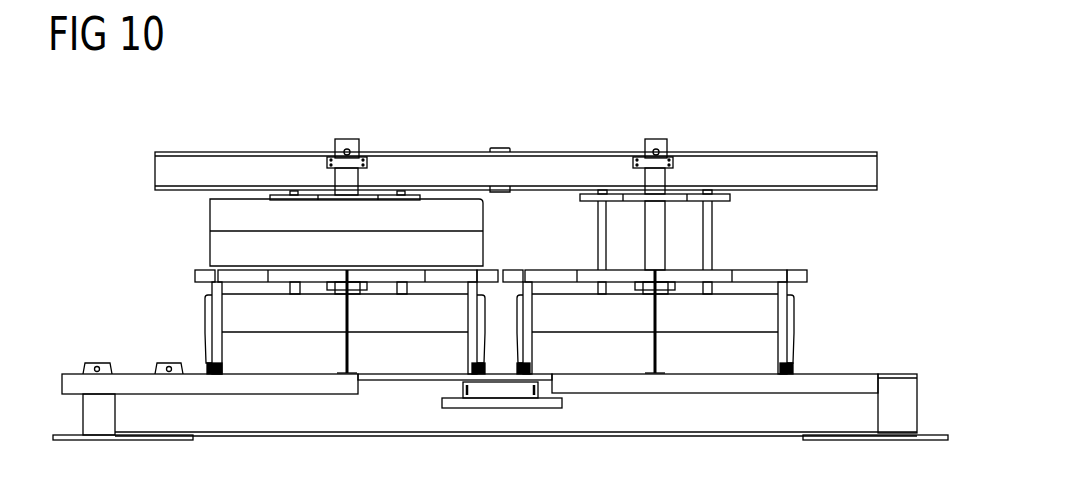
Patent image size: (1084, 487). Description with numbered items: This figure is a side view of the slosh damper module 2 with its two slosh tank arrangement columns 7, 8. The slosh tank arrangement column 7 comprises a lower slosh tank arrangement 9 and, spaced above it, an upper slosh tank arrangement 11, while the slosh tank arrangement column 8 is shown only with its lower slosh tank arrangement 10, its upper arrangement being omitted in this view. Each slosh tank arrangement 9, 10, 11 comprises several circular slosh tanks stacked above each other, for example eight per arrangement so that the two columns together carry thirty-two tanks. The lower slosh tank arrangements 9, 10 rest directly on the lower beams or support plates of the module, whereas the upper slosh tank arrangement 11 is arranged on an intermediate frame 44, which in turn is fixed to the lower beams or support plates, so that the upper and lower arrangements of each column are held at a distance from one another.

The slosh damper module 2 is at (586, 128).
The slosh tank arrangement column 7 is at (386, 128).
The slosh tank arrangement column 8 is at (723, 130).
The intermediate frame 44 is at (457, 272).
The upper slosh tank arrangement 11 is at (215, 213).
The lower slosh tank arrangement 9 is at (238, 357).
The lower slosh tank arrangement 10 is at (757, 357).